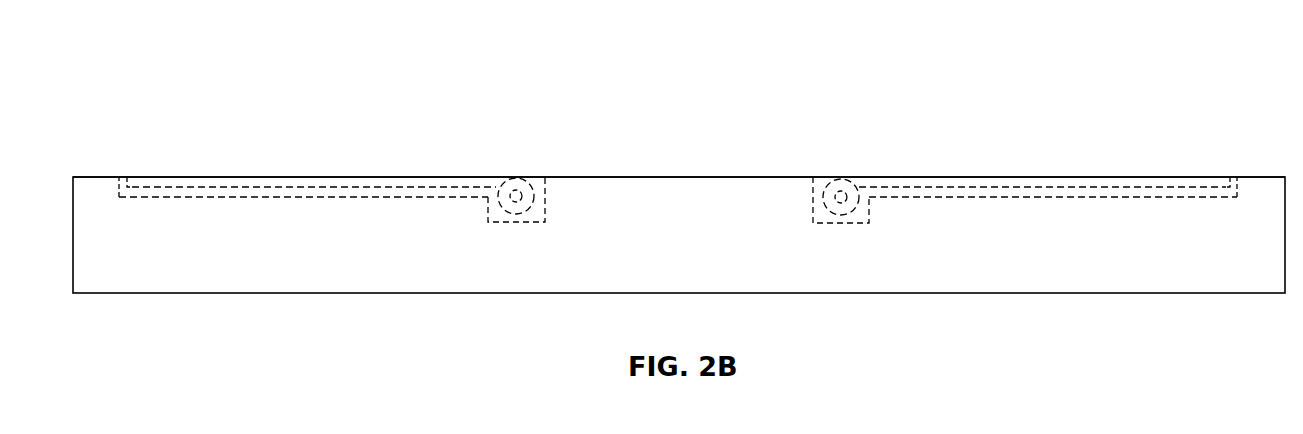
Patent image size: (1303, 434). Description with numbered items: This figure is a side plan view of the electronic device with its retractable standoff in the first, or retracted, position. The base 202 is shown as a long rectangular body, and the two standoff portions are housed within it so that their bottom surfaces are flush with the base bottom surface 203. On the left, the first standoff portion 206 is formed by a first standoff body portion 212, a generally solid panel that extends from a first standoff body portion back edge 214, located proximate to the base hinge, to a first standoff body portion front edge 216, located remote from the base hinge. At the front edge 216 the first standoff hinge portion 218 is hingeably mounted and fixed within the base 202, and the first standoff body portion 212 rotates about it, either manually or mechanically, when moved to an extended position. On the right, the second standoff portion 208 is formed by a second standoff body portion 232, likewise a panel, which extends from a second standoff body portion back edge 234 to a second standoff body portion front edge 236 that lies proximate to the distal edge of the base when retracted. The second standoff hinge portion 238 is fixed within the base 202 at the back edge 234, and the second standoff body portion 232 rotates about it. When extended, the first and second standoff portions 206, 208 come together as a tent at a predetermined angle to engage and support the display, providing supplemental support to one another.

The base 202 is at (1116, 81).
The base bottom surface 203 is at (681, 177).
The first standoff portion 206 is at (371, 188).
The second standoff portion 208 is at (1045, 186).
The first standoff body portion 212 is at (298, 186).
The first standoff body portion back edge 214 is at (135, 180).
The first standoff body portion front edge 216 is at (506, 178).
The first standoff hinge portion 218 is at (525, 180).
The second standoff body portion 232 is at (1080, 186).
The second standoff body portion back edge 234 is at (850, 183).
The second standoff body portion front edge 236 is at (1221, 184).
The second standoff hinge portion 238 is at (832, 184).